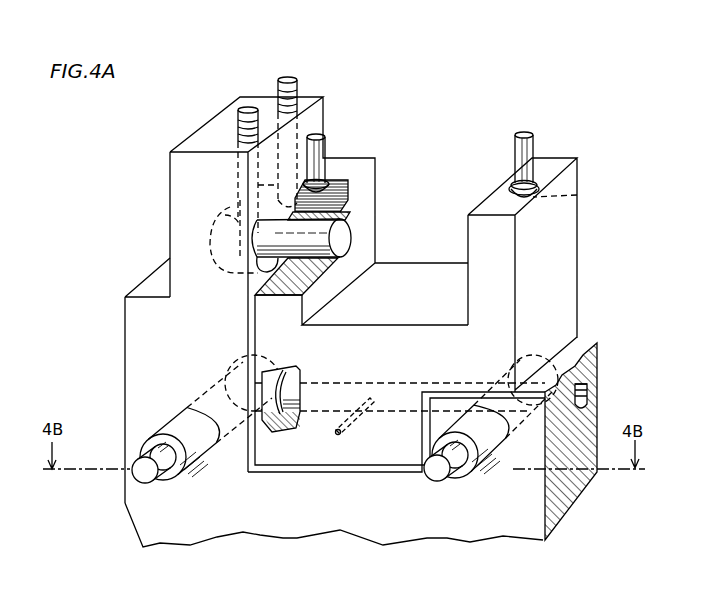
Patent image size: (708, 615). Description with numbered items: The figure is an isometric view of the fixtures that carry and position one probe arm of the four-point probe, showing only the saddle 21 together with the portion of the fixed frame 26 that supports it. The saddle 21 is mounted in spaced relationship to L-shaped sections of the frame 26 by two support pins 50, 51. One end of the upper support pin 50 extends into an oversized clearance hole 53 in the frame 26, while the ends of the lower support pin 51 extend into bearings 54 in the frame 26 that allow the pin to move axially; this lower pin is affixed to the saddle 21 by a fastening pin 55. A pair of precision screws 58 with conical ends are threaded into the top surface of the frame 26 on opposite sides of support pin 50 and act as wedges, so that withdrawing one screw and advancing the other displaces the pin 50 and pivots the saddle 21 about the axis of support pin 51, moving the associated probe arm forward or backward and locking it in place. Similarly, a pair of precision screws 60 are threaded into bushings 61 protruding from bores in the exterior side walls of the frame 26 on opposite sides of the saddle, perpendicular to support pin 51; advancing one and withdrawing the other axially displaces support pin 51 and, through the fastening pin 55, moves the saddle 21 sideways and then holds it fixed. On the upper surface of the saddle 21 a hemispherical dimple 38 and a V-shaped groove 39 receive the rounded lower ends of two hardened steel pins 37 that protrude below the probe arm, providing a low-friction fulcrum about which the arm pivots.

The saddle 21 is at (560, 258).
The frame 26 is at (288, 515).
The hardened steel pins 37 is at (315, 153).
The hemispherical dimple 38 is at (585, 195).
The V-shaped groove 39 is at (343, 191).
The support pin 50 is at (340, 240).
The support pin 51 is at (287, 392).
The oversized clearance hole 53 is at (268, 260).
The bearings 54 is at (282, 372).
The fastening pin 55 is at (342, 435).
The precision screws 58 is at (280, 82).
The precision screws 60 is at (145, 476).
The bushings 61 is at (167, 425).